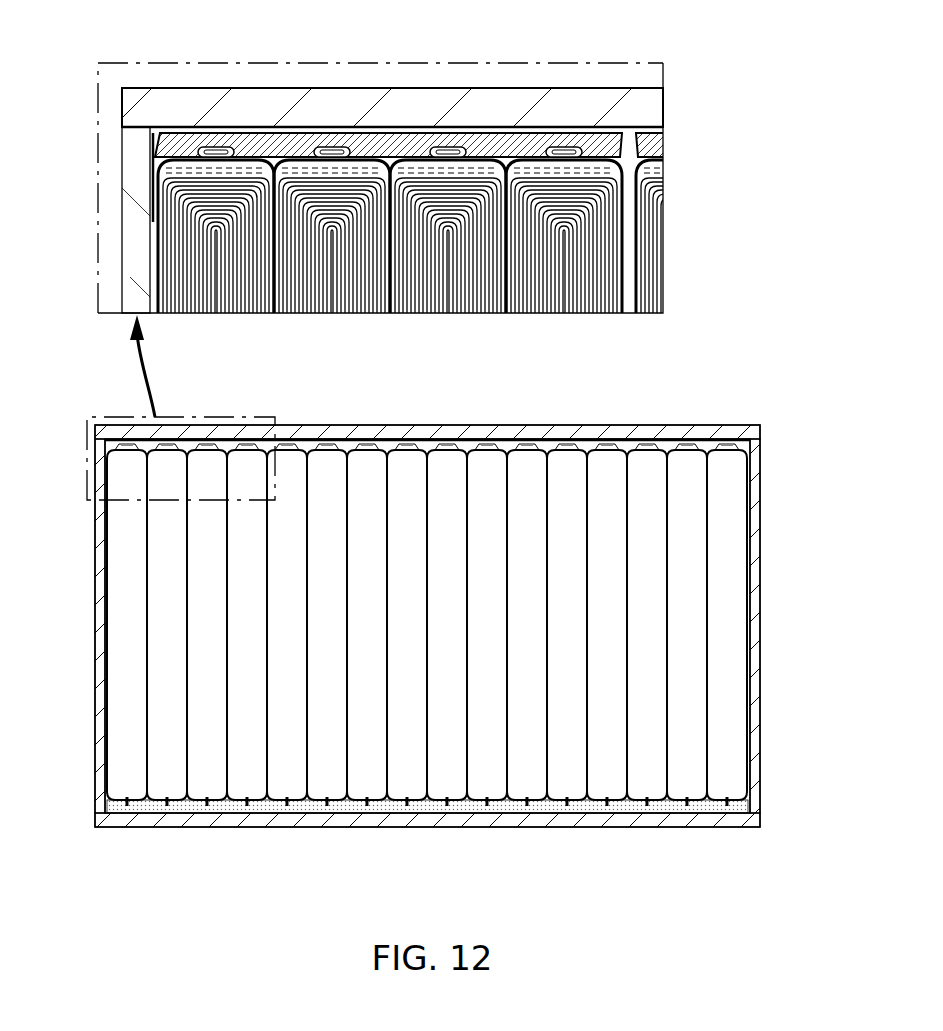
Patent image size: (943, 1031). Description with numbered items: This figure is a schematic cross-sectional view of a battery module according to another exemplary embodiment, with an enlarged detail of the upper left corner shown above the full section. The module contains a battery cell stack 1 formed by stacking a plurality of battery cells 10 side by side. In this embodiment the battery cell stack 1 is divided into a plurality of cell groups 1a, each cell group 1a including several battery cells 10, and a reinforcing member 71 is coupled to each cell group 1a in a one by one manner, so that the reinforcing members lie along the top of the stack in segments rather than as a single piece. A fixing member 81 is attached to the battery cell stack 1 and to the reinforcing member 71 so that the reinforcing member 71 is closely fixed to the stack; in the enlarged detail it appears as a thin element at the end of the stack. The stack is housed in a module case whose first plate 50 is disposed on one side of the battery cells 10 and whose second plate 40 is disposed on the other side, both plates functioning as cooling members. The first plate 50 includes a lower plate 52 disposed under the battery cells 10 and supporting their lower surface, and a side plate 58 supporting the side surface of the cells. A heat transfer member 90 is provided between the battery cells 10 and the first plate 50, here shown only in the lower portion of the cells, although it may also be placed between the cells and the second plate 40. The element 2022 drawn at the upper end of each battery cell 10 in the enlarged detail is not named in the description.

The battery cell stack 1 is at (427, 668).
The cell group 1a is at (326, 324).
The battery cell 10 is at (492, 334).
The second plate 40 is at (367, 108).
The first plate 50 is at (424, 531).
The lower plate 52 is at (727, 820).
The side plate 58 is at (757, 775).
The reinforcing member 71 is at (187, 145).
The fixing member 81 is at (150, 170).
The heat transfer member 90 is at (510, 806).
The electrode tab 2022 is at (482, 145).